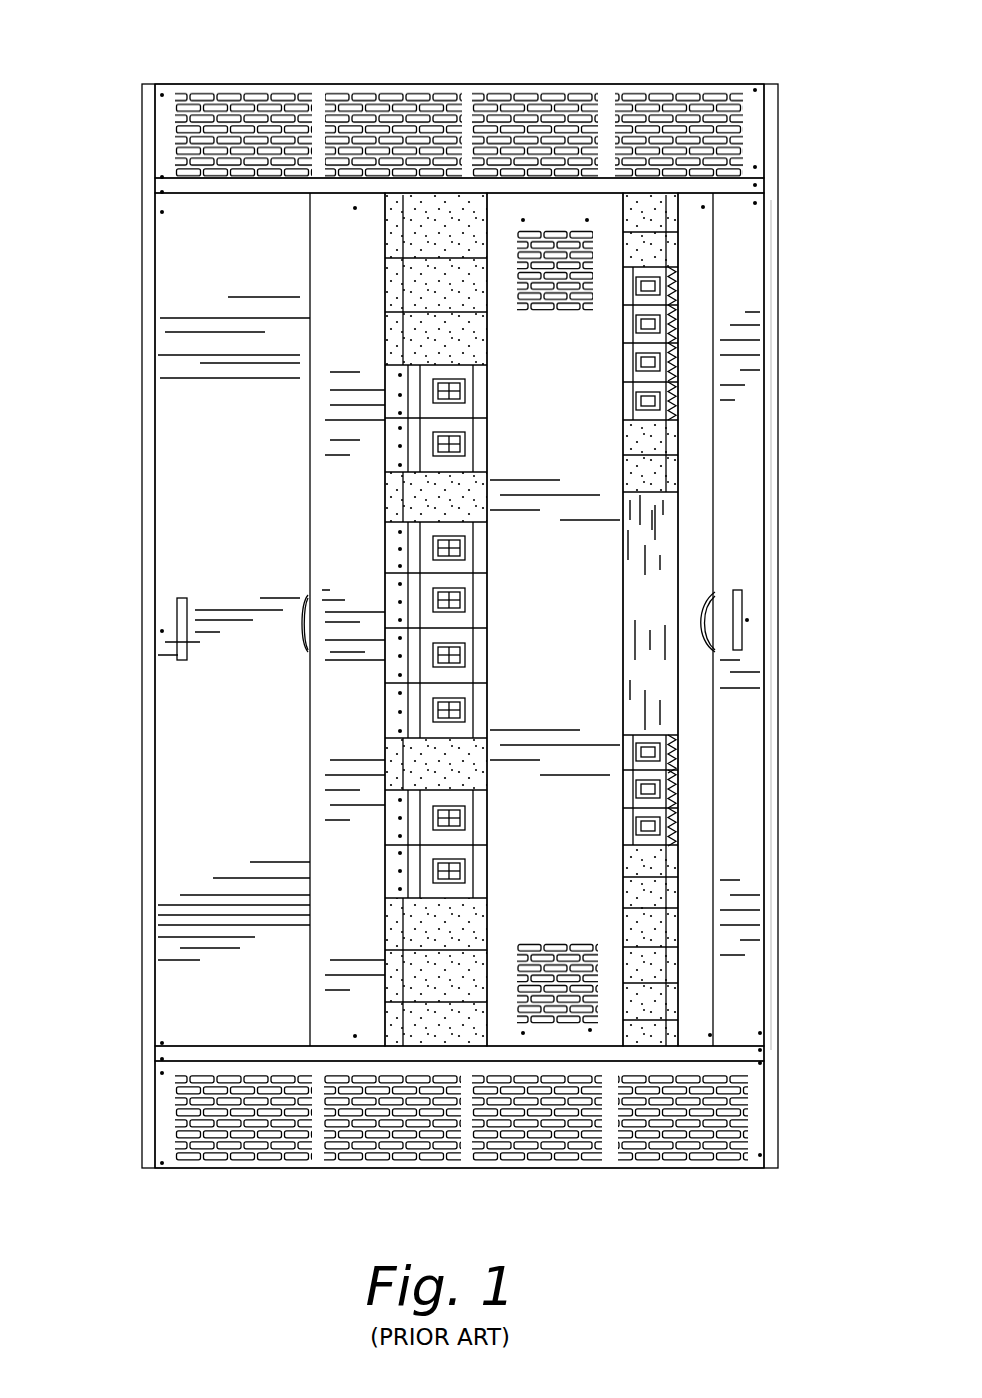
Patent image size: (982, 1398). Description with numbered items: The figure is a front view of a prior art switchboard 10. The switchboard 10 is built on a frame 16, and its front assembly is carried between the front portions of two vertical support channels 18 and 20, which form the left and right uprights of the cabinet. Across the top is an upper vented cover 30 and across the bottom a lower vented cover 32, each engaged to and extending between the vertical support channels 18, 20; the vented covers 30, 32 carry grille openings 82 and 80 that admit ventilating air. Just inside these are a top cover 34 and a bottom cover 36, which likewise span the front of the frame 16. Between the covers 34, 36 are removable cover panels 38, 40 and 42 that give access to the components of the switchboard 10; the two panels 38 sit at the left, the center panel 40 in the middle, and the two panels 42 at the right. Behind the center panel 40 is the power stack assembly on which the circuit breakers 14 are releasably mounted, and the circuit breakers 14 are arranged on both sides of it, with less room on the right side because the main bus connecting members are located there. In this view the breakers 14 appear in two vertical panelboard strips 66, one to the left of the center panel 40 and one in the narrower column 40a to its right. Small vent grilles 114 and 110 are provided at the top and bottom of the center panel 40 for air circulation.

The switchboard 10 is at (806, 92).
The circuit breakers 14 is at (462, 395).
The frame 16 is at (783, 428).
The vertical support channel 18 is at (142, 862).
The vertical support channel 20 is at (780, 657).
The upper vented cover 30 is at (466, 86).
The lower vented cover 32 is at (468, 1166).
The top cover 34 is at (187, 190).
The bottom cover 36 is at (190, 1050).
The removable cover panel 38 is at (248, 716).
The removable cover panel 40 is at (572, 702).
The panel column 40a is at (670, 610).
The removable cover panel 42 is at (713, 716).
The panelboard 66 is at (398, 550).
The bottom vents 80 is at (230, 1165).
The top vents 82 is at (362, 100).
The lower vent 110 is at (560, 960).
The upper vent 114 is at (549, 304).